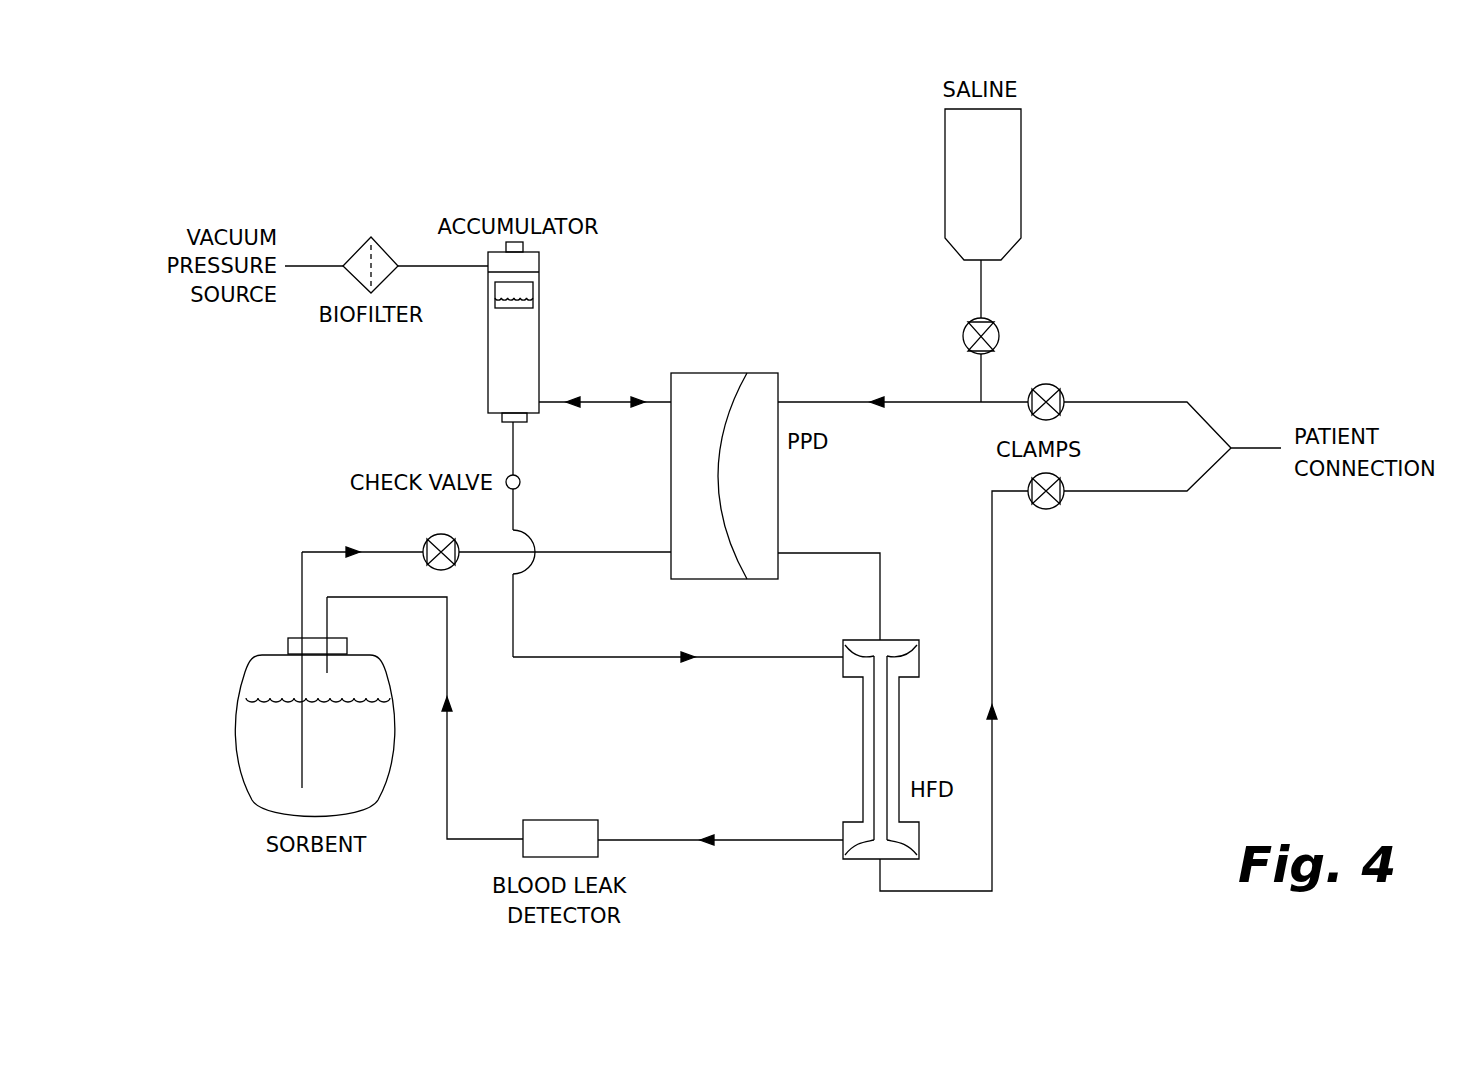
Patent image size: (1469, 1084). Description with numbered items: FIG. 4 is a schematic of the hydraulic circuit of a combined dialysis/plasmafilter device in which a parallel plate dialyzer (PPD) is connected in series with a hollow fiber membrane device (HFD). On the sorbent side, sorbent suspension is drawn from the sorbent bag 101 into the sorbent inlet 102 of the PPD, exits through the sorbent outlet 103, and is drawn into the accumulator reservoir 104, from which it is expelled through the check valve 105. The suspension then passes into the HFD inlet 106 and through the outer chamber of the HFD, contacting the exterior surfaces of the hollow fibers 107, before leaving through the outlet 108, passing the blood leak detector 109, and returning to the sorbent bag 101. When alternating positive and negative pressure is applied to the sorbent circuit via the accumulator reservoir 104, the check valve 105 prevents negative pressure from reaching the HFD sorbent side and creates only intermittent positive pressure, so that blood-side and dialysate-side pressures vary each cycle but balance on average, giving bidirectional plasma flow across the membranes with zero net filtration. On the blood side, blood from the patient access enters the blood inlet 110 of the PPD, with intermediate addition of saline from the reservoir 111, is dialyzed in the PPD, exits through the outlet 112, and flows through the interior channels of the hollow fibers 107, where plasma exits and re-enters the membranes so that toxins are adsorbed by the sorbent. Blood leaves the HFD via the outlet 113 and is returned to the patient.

The sorbent bag 101 is at (243, 728).
The sorbent inlet 102 is at (655, 562).
The sorbent outlet 103 is at (656, 386).
The accumulator reservoir 104 is at (488, 362).
The check valve 105 is at (520, 478).
The HFD inlet 106 is at (846, 690).
The hollow fibers 107 is at (880, 707).
The outlet 108 is at (835, 833).
The blood leak detector 109 is at (572, 820).
The blood inlet 110 is at (795, 380).
The reservoir 111 is at (1021, 170).
The outlet 112 is at (795, 540).
The outlet 113 is at (866, 870).